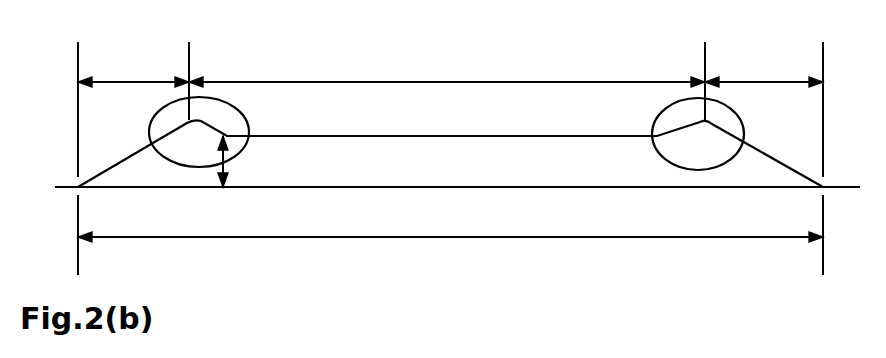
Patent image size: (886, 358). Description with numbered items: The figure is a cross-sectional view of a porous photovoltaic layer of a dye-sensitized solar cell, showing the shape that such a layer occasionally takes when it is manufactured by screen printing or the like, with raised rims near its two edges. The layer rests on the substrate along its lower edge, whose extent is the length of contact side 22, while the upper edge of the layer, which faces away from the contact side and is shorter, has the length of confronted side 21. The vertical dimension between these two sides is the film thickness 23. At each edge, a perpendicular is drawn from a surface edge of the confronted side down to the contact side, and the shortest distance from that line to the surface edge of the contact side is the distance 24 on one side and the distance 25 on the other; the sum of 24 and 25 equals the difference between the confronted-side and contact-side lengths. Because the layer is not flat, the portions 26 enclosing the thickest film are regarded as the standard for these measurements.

The length of confronted side 21 is at (447, 55).
The length of contact side 22 is at (450, 223).
The film thickness 23 is at (248, 161).
The shortest distance 24 is at (133, 62).
The shortest distance 25 is at (764, 59).
The portion having the largest film thickness 26 is at (250, 118).